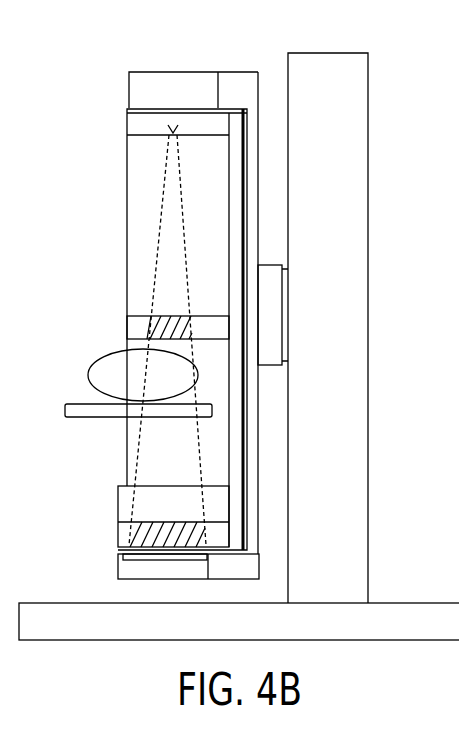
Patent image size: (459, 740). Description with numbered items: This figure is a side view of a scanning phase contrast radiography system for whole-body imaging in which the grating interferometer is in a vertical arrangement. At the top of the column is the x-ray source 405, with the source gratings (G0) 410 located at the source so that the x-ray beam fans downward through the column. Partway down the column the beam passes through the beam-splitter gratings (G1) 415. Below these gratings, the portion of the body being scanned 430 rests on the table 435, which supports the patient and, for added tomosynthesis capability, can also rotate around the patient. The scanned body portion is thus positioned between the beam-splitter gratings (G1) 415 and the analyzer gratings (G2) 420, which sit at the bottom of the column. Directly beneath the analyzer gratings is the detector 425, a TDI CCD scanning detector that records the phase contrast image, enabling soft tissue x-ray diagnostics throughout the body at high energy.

The x-ray source 405 is at (172, 72).
The source gratings (G0) 410 is at (168, 125).
The beam-splitter gratings (G1) 415 is at (147, 334).
The analyzer gratings (G2) 420 is at (128, 542).
The detector 425 is at (118, 567).
The portion of the body being scanned 430 is at (88, 366).
The table 435 is at (92, 418).